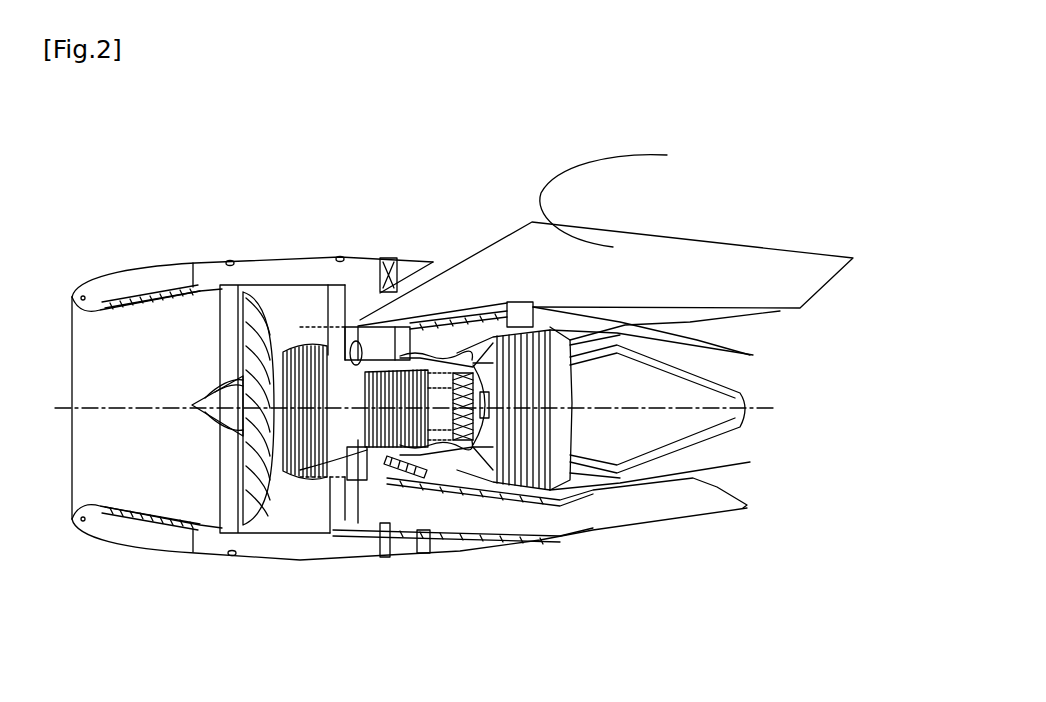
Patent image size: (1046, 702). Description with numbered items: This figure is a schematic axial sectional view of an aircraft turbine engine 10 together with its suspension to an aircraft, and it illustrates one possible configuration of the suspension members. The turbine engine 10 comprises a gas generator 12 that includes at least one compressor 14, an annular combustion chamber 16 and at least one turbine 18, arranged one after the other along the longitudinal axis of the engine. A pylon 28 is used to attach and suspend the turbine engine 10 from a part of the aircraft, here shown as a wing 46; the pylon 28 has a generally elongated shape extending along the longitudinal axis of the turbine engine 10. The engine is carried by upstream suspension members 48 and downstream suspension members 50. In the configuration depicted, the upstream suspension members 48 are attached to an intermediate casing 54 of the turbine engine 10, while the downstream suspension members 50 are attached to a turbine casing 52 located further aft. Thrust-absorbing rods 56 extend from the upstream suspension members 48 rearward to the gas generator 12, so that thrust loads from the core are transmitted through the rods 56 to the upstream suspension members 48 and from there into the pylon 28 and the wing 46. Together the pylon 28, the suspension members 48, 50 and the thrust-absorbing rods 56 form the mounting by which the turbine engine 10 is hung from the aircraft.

The aircraft turbine engine 10 is at (94, 243).
The gas generator 12 is at (461, 514).
The compressor 14 is at (380, 442).
The annular combustion chamber 16 is at (442, 450).
The turbine 18 is at (540, 493).
The pylon 28 is at (470, 248).
The wing 46 is at (637, 160).
The upstream suspension members 48 is at (372, 343).
The downstream suspension members 50 is at (523, 303).
The turbine casing 52 is at (520, 492).
The intermediate casing 54 is at (357, 473).
The thrust-absorbing rods 56 is at (418, 437).